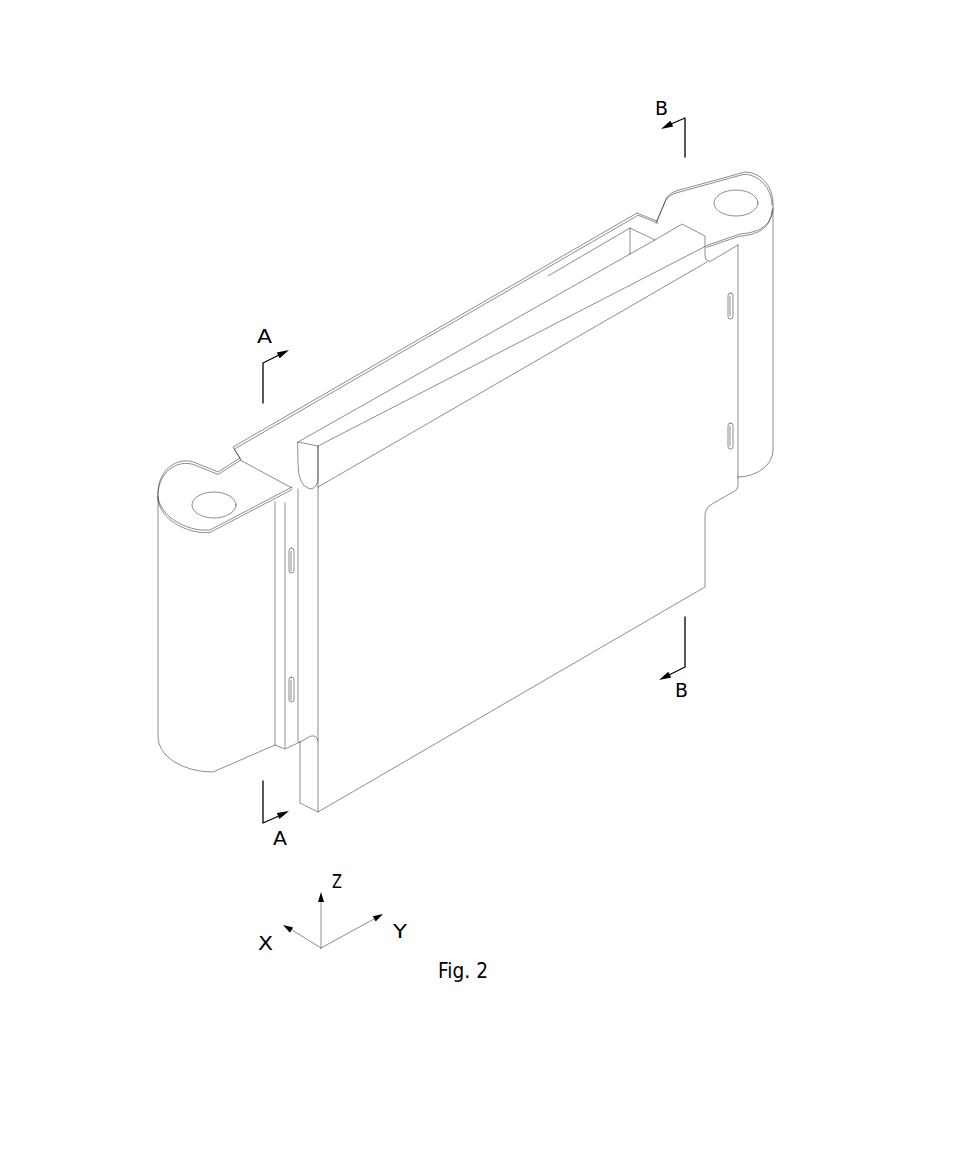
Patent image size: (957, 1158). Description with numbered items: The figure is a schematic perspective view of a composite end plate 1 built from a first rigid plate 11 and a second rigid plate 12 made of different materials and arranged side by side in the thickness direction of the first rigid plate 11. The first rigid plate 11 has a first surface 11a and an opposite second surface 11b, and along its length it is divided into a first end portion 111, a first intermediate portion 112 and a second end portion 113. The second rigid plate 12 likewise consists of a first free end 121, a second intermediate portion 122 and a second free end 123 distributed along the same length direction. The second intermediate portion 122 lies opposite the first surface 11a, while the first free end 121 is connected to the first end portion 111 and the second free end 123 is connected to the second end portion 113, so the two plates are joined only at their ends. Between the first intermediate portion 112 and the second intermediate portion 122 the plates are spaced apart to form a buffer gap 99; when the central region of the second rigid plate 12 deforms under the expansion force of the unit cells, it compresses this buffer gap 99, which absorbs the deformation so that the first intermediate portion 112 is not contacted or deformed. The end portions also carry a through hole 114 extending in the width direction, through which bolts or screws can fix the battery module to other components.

The composite end plate 1 is at (452, 24).
The first rigid plate 11 is at (576, 730).
The first surface 11a is at (545, 288).
The second surface 11b is at (582, 644).
The second rigid plate 12 is at (480, 248).
The buffer gap 99 is at (618, 232).
The first end portion 111 is at (203, 485).
The first intermediate portion 112 is at (467, 357).
The second end portion 113 is at (723, 182).
The through hole 114 is at (205, 507).
The first free end 121 is at (187, 592).
The second intermediate portion 122 is at (403, 347).
The second free end 123 is at (763, 270).